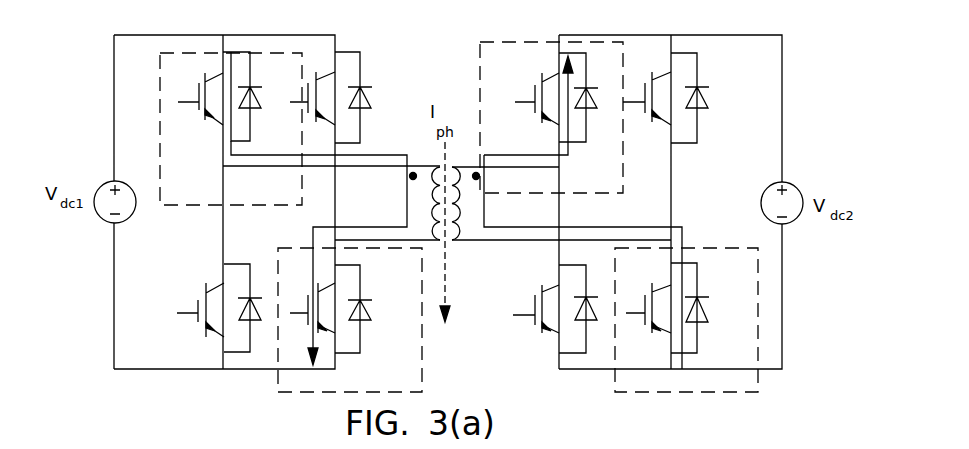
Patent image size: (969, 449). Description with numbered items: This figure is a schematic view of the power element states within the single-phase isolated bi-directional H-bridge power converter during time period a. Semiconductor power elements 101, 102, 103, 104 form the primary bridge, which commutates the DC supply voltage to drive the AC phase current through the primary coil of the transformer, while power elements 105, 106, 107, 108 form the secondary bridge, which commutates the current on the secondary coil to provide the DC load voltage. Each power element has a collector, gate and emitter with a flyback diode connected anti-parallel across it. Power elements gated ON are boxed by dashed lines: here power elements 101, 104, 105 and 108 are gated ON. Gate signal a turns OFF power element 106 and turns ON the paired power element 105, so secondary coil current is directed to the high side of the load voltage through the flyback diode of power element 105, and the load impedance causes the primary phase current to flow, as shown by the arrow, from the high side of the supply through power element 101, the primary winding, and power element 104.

The power element 101 is at (199, 104).
The power element 102 is at (198, 312).
The power element 103 is at (305, 92).
The power element 104 is at (303, 300).
The power element 105 is at (532, 103).
The power element 106 is at (533, 312).
The power element 107 is at (645, 92).
The power element 108 is at (645, 312).